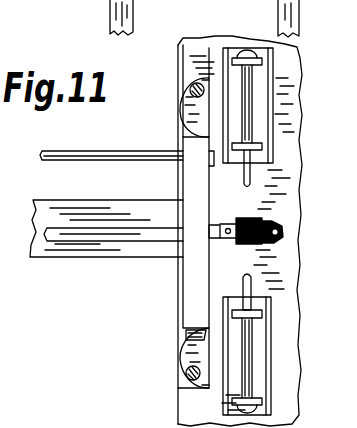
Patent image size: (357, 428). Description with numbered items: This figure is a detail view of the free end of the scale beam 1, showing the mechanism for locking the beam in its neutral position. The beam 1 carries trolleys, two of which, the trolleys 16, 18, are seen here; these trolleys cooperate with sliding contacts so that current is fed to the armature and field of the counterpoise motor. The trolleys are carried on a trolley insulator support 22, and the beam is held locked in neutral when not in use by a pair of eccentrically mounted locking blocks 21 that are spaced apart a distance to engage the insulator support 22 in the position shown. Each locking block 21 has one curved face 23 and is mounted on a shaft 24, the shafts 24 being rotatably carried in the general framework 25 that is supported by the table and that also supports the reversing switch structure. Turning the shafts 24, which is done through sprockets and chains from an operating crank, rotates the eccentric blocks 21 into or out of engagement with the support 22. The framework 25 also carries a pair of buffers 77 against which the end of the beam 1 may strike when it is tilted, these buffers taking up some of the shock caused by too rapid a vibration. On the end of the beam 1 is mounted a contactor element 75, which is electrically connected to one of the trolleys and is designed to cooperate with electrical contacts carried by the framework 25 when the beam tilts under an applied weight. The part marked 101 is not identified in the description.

The scale beam 1 is at (123, 212).
The trolley 16 is at (72, 151).
The trolley 18 is at (78, 232).
The locking block 21 is at (190, 112).
The trolley insulator support 22 is at (193, 298).
The curved face 23 is at (190, 90).
The shaft 24 is at (184, 81).
The framework 25 is at (198, 43).
The contactor element 75 is at (266, 230).
The buffer 77 is at (247, 85).
The post 101 is at (89, 17).